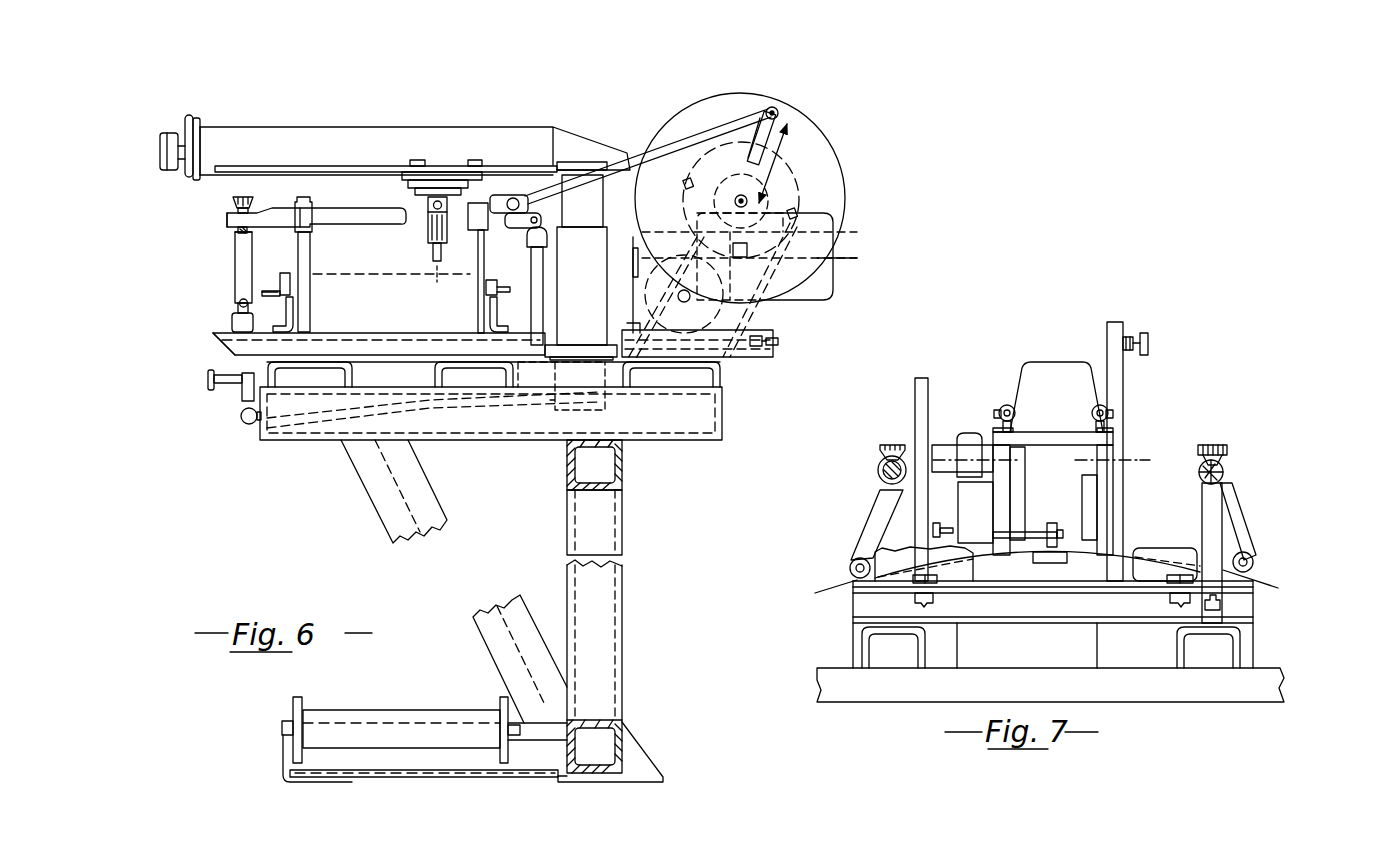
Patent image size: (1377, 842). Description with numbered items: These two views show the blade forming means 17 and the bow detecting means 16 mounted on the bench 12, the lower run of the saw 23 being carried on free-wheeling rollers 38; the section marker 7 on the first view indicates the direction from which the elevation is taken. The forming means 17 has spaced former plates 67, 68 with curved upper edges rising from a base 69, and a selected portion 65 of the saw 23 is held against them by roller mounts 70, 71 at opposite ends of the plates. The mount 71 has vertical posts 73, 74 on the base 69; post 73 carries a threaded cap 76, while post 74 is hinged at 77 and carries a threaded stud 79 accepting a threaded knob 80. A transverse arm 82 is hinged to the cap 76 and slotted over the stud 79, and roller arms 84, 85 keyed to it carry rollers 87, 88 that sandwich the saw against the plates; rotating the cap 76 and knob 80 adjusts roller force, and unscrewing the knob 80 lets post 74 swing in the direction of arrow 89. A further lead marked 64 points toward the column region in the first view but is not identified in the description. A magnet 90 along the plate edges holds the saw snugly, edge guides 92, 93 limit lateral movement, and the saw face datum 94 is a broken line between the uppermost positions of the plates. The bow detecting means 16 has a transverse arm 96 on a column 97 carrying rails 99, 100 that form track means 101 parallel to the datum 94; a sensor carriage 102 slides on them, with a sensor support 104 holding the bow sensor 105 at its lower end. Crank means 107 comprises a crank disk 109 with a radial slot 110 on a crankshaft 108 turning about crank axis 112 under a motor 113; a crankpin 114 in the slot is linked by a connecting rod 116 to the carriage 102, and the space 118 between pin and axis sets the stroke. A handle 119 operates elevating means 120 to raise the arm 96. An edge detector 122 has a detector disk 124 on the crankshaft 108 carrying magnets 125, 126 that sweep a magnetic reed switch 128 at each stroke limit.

In FIG. 6, the section line 7— 7 is at (180, 107).
In FIG. 6, the bench 12 is at (632, 436).
In FIG. 7, the bench 12 is at (833, 678).
In FIG. 6, the bow detecting means 16 is at (574, 121).
In FIG. 7, the bow detecting means 16 is at (1005, 373).
In FIG. 6, the blade forming means 17 is at (212, 325).
In FIG. 7, the blade forming means 17 is at (840, 560).
In FIG. 7, the saw 23 is at (820, 589).
In FIG. 6, the free-wheeling rollers 38 is at (383, 692).
In FIG. 6, the pivot arm 64 is at (293, 195).
In FIG. 7, the pivot arm 64 is at (860, 518).
In FIG. 7, the selected portion of the saw 65 is at (1092, 547).
In FIG. 6, the former plate 67 is at (293, 276).
In FIG. 7, the former plate 67 is at (1043, 583).
In FIG. 6, the former plate 68 is at (478, 288).
In FIG. 6, the base 69 is at (392, 312).
In FIG. 7, the base 69 is at (995, 610).
In FIG. 7, the roller mount 70 is at (893, 446).
In FIG. 6, the roller mount 71 is at (226, 240).
In FIG. 7, the roller mount 71 is at (1242, 446).
In FIG. 6, the vertical post 73 is at (540, 270).
In FIG. 6, the vertical post 74 is at (235, 291).
In FIG. 7, the vertical post 74 is at (1207, 510).
In FIG. 6, the threaded cap 76 is at (560, 247).
In FIG. 6, the hinge 77 is at (240, 311).
In FIG. 7, the hinge 77 is at (1225, 605).
In FIG. 6, the threaded stud 79 is at (232, 220).
In FIG. 7, the threaded stud 79 is at (1225, 476).
In FIG. 6, the threaded knob 80 is at (233, 197).
In FIG. 7, the threaded knob 80 is at (1217, 443).
In FIG. 6, the transverse arm 82 is at (357, 209).
In FIG. 7, the transverse arm 82 is at (1228, 464).
In FIG. 6, the roller arm 84 is at (312, 250).
In FIG. 7, the roller arm 84 is at (1245, 535).
In FIG. 6, the roller arm 85 is at (487, 258).
In FIG. 6, the roller 87 is at (301, 309).
In FIG. 7, the roller 87 is at (1257, 557).
In FIG. 6, the roller 88 is at (478, 310).
In FIG. 6, the arrow 89 is at (152, 276).
In FIG. 7, the magnet 90 is at (1062, 566).
In FIG. 6, the edge guide 92 is at (283, 278).
In FIG. 6, the edge guide 93 is at (512, 292).
In FIG. 6, the saw face datum 94 is at (404, 274).
In FIG. 6, the transverse arm 96 is at (390, 136).
In FIG. 7, the transverse arm 96 is at (1058, 352).
In FIG. 6, the column 97 is at (590, 211).
In FIG. 7, the column 97 is at (1100, 474).
In FIG. 7, the second parallel rail 99 is at (1000, 410).
In FIG. 6, the second parallel rail 100 is at (275, 164).
In FIG. 7, the second parallel rail 100 is at (1110, 410).
In FIG. 6, the track means 101 is at (291, 160).
In FIG. 7, the track means 101 is at (1128, 394).
In FIG. 6, the sensor carriage 102 is at (433, 175).
In FIG. 7, the sensor carriage 102 is at (1105, 434).
In FIG. 7, the sensor support 104 is at (1036, 461).
In FIG. 6, the vertical or bow sensor 105 is at (418, 238).
In FIG. 7, the vertical or bow sensor 105 is at (1065, 513).
In FIG. 6, the crank means 107 is at (767, 198).
In FIG. 7, the crank means 107 is at (1185, 332).
In FIG. 7, the crankshaft 108 is at (942, 452).
In FIG. 6, the crank disk 109 is at (845, 198).
In FIG. 7, the crank disk 109 is at (1112, 322).
In FIG. 6, the radial slot 110 is at (748, 152).
In FIG. 6, the crank axis 112 is at (690, 228).
In FIG. 7, the crank axis 112 is at (1142, 458).
In FIG. 6, the motor 113 is at (745, 316).
In FIG. 6, the crankpin 114 is at (778, 110).
In FIG. 7, the crankpin 114 is at (1150, 334).
In FIG. 6, the connecting rod 116 is at (690, 132).
In FIG. 6, the space 118 is at (780, 152).
In FIG. 6, the handle 119 is at (240, 398).
In FIG. 6, the elevating means 120 is at (608, 407).
In FIG. 7, the edge detector 122 is at (910, 397).
In FIG. 6, the detector disk 124 is at (834, 165).
In FIG. 7, the detector disk 124 is at (922, 408).
In FIG. 6, the magnet 125 is at (686, 186).
In FIG. 6, the magnet 126 is at (845, 222).
In FIG. 6, the magnetic reed switch 128 is at (745, 258).
In FIG. 7, the magnetic reed switch 128 is at (942, 530).